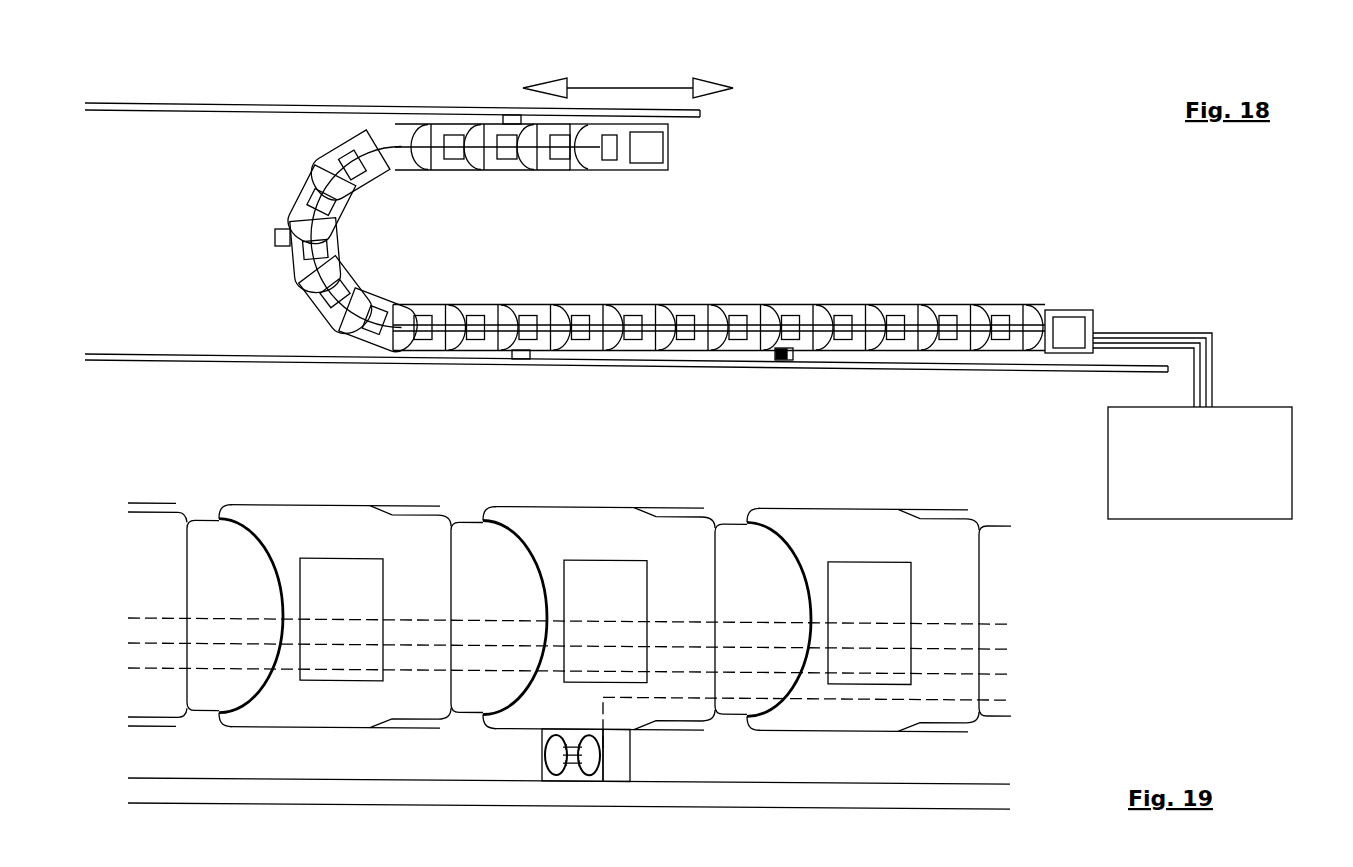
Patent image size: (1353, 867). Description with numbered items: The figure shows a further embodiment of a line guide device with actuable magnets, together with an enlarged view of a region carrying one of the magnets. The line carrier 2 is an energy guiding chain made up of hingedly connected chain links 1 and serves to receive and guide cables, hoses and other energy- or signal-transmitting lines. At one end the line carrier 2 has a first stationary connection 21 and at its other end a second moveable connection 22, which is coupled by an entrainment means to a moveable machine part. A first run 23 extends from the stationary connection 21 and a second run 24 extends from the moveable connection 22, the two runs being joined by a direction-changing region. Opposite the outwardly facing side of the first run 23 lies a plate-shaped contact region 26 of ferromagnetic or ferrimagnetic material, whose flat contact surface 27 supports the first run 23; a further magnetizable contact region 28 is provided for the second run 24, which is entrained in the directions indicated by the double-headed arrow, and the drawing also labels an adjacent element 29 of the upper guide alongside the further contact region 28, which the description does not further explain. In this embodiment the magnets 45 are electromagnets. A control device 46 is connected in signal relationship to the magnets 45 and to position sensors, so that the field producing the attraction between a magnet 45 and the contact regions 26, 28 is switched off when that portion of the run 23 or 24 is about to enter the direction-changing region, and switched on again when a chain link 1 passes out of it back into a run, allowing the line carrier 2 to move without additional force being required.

In FIG. 19, the chain link 1 is at (343, 494).
In FIG. 18, the line carrier 2 is at (797, 209).
In FIG. 18, the first stationary connection 21 is at (1069, 310).
In FIG. 18, the second moveable connection 22 is at (669, 166).
In FIG. 18, the first run 23 is at (663, 240).
In FIG. 18, the second run 24 is at (513, 182).
In FIG. 18, the contact region 26 is at (463, 363).
In FIG. 18, the contact surface 27 is at (251, 355).
In FIG. 18, the further contact region 28 is at (402, 106).
In FIG. 18, the upper guide channel wall 29 is at (262, 115).
In FIG. 18, the magnet 45 is at (513, 115).
In FIG. 19, the magnet 45 is at (598, 762).
In FIG. 18, the control device 46 is at (1200, 463).